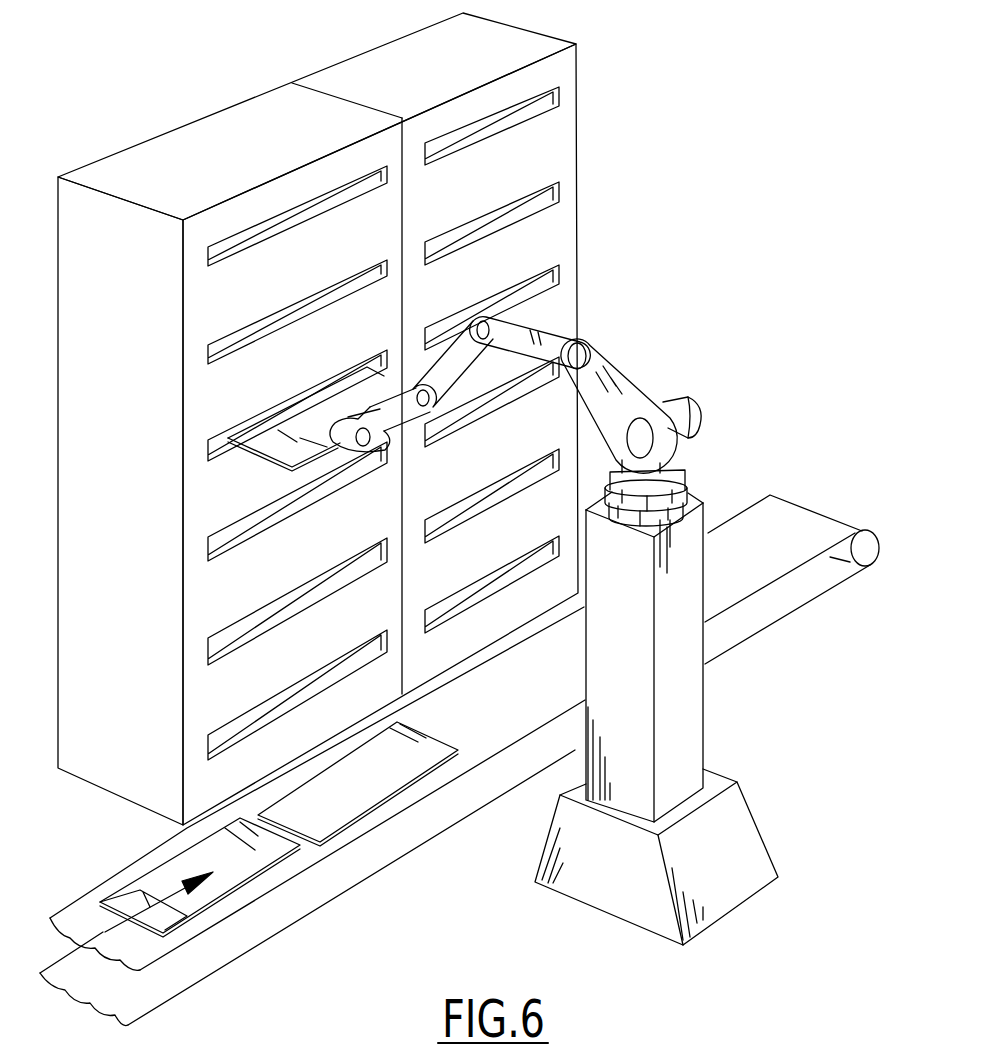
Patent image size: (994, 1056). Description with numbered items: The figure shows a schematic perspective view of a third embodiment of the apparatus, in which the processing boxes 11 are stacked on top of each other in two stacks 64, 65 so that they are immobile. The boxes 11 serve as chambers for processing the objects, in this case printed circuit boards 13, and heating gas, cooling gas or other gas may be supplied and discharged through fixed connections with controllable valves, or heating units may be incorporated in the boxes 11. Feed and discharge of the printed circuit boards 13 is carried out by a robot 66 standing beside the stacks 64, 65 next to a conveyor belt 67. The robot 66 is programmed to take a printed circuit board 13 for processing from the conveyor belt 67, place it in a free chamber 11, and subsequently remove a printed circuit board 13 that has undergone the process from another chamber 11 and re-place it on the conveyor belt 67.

The box 11 is at (597, 82).
The printed circuit board 13 is at (265, 428).
The stack 64 is at (346, 72).
The stack 65 is at (143, 162).
The robot 66 is at (721, 473).
The conveyor belt 67 is at (377, 815).